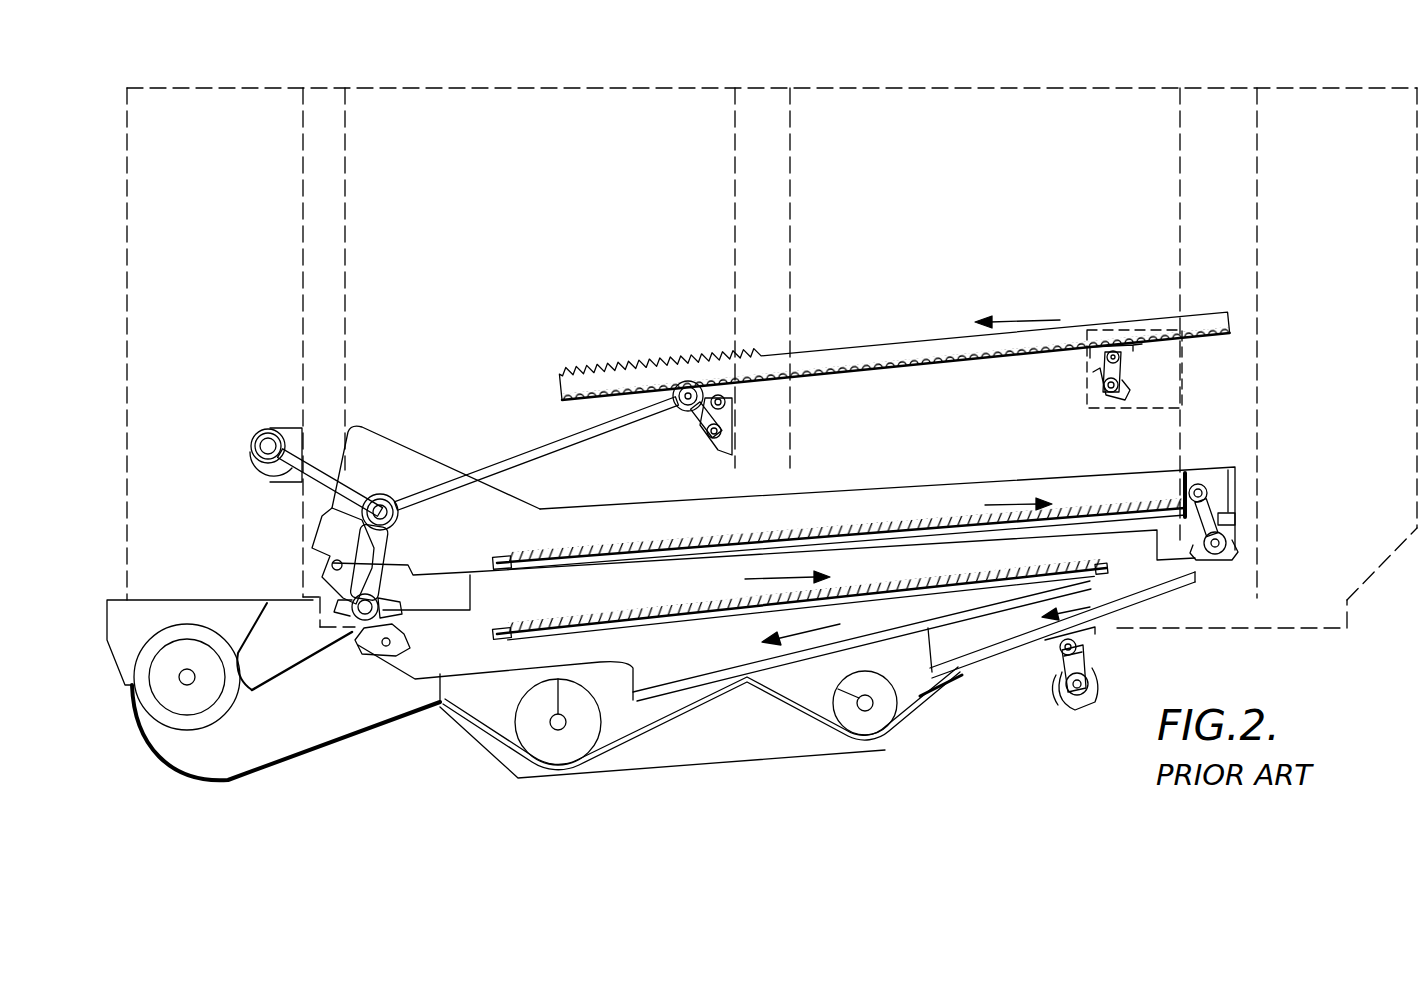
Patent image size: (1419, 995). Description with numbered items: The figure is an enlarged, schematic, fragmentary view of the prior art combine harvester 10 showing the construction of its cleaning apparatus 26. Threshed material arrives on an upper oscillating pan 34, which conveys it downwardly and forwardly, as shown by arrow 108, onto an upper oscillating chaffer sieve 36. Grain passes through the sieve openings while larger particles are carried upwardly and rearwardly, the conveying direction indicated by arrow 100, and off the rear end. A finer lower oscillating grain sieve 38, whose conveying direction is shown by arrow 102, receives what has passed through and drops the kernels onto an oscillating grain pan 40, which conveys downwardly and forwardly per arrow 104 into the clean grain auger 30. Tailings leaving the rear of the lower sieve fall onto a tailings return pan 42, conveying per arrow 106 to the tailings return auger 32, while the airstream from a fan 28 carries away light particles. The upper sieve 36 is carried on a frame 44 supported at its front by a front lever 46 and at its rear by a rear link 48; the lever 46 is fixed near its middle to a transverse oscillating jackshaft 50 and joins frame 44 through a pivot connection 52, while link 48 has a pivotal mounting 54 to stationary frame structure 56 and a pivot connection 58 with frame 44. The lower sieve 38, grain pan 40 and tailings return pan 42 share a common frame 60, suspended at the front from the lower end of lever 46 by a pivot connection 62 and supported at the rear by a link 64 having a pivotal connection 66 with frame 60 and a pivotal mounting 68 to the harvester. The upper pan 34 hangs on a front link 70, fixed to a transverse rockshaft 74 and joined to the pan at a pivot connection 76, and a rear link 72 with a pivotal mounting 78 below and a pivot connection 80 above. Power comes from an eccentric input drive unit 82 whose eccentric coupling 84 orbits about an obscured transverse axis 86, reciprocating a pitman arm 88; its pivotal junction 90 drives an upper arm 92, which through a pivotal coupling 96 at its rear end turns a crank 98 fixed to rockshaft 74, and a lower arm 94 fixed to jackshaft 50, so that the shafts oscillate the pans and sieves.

The combine harvester 10 is at (589, 80).
The cleaning apparatus 26 is at (480, 392).
The fan 28 is at (196, 762).
The clean grain auger 30 is at (587, 752).
The tailings return auger 32 is at (880, 720).
The upper oscillating pan 34 is at (882, 352).
The upper oscillating chaffer sieve 36 is at (883, 537).
The lower oscillating grain sieve 38 is at (670, 604).
The oscillating grain pan 40 is at (693, 680).
The tailings return pan 42 is at (985, 660).
The frame 44 is at (930, 497).
The front lever 46 is at (330, 587).
The rear link 48 is at (1215, 500).
The oscillating jackshaft 50 is at (370, 604).
The pivot connection 52 is at (337, 560).
The pivotal mounting 54 is at (1200, 482).
The stationary frame structure 56 is at (1262, 348).
The pivot connection 58 is at (1220, 556).
The common frame 60 is at (500, 662).
The pivot connection 62 is at (395, 649).
The link 64 is at (1100, 703).
The pivotal connection 66 is at (1056, 655).
The pivotal mounting 68 is at (1088, 705).
The front link 70 is at (728, 412).
The rear link 72 is at (1122, 375).
The rockshaft 74 is at (705, 436).
The pivot connection 76 is at (727, 399).
The pivotal mounting 78 is at (1100, 397).
The pivot connection 80 is at (1112, 345).
The eccentric input drive unit 82 is at (250, 424).
The eccentric coupling 84 is at (260, 455).
The transverse axis 86 is at (283, 470).
The pitman arm 88 is at (320, 462).
The pivotal junction 90 is at (382, 494).
The upper arm 92 is at (487, 470).
The arm 94 is at (383, 541).
The pawl pivot 96 is at (683, 383).
The crank 98 is at (697, 416).
The arrow 100 is at (1007, 503).
The arrow 102 is at (785, 574).
The arrow 104 is at (800, 632).
The arrow 106 is at (1093, 596).
The arrow 108 is at (1010, 318).